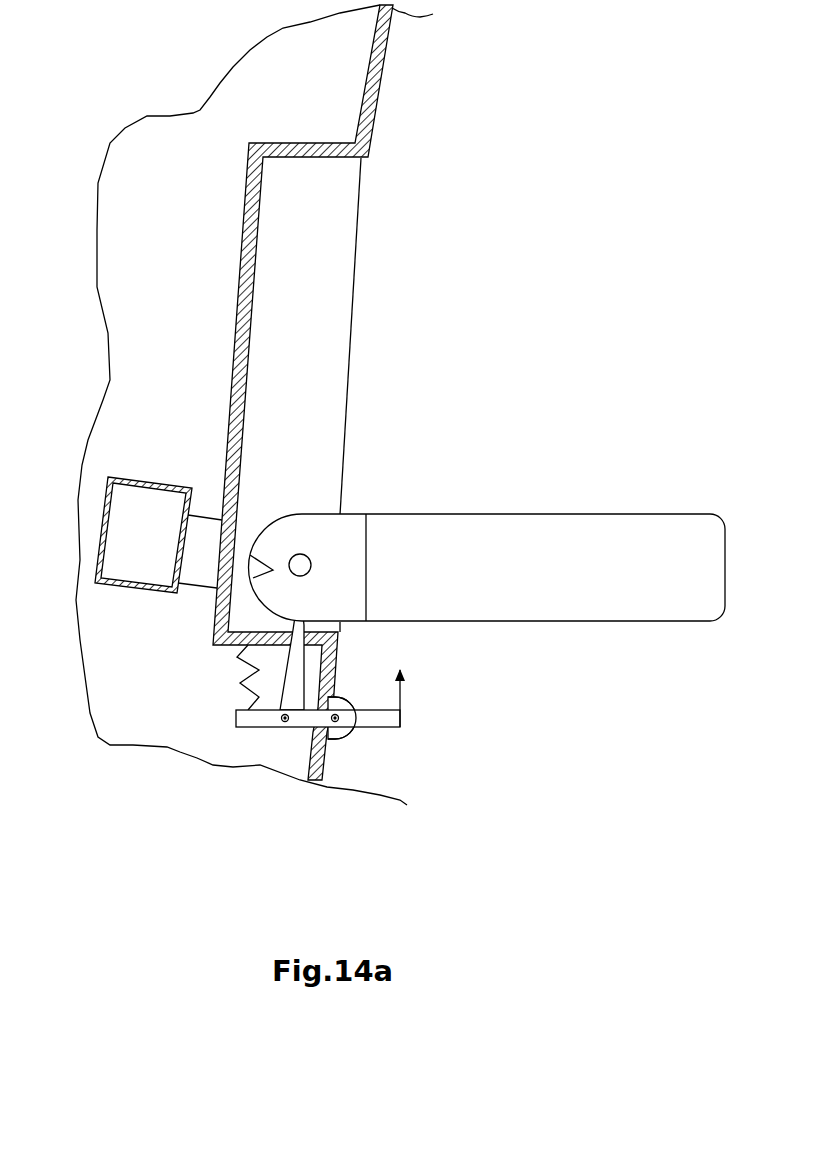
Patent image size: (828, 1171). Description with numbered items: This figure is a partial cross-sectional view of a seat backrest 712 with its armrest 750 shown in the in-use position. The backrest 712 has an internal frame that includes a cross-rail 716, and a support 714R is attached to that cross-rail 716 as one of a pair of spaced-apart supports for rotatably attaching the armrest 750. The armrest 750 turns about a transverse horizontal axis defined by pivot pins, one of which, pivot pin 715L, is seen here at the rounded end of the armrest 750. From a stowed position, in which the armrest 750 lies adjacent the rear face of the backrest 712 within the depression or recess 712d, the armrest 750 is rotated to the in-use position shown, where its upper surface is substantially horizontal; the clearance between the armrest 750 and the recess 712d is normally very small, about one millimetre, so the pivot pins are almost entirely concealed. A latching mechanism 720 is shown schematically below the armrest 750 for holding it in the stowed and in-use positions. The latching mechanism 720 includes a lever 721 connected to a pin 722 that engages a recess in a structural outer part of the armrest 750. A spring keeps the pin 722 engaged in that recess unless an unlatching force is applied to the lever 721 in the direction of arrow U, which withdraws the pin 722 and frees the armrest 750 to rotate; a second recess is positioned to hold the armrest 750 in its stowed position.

The backrest 712 is at (382, 100).
The depression or recess 712d is at (315, 158).
The support 714R is at (197, 583).
The pivot pin 715L is at (380, 499).
The cross-rail 716 is at (158, 485).
The latching mechanism 720 is at (232, 742).
The lever 721 is at (363, 727).
The pin 722 is at (283, 668).
The armrest 750 is at (547, 512).
The arrow U is at (400, 697).